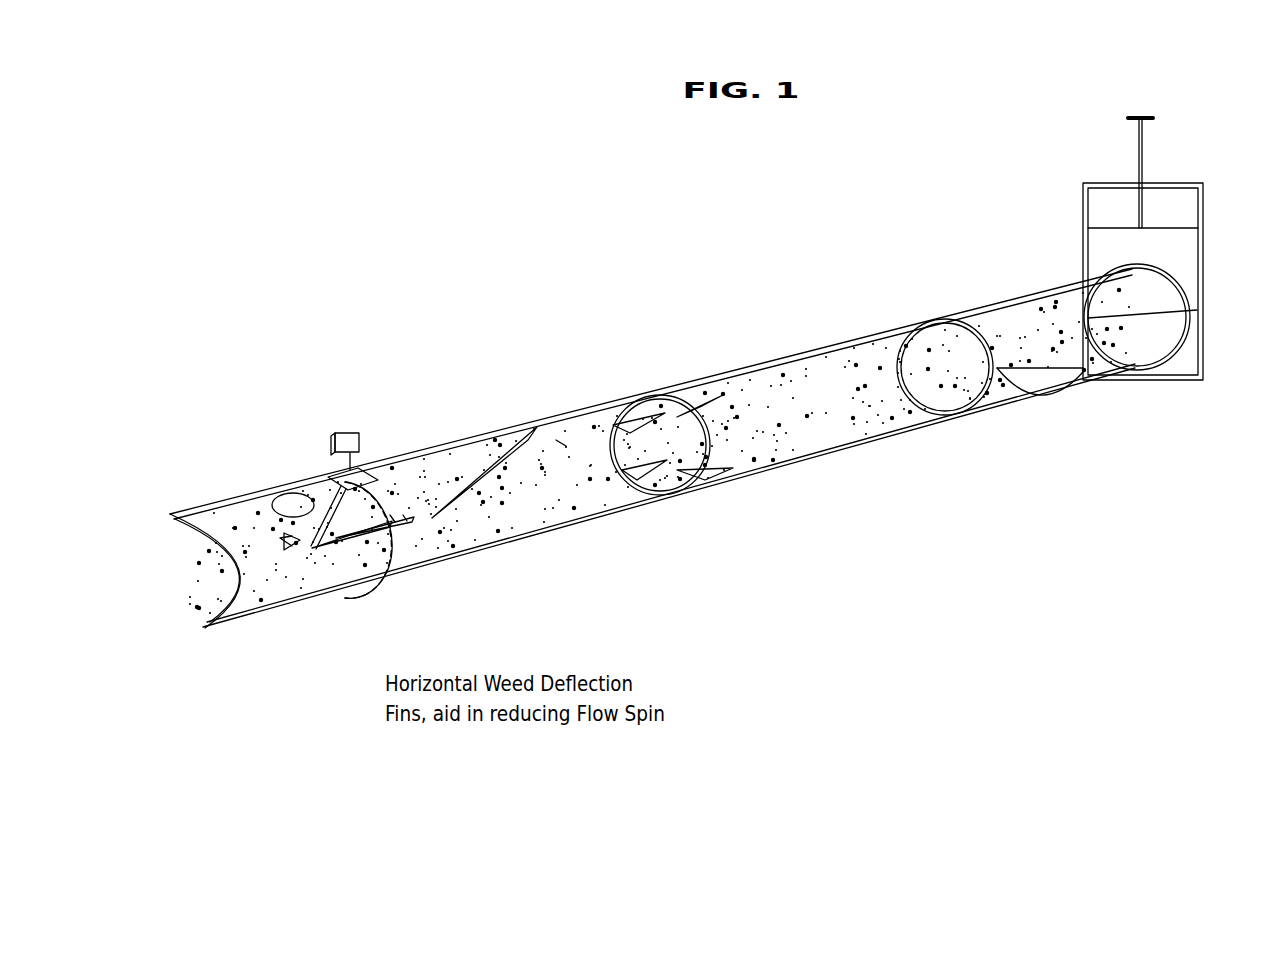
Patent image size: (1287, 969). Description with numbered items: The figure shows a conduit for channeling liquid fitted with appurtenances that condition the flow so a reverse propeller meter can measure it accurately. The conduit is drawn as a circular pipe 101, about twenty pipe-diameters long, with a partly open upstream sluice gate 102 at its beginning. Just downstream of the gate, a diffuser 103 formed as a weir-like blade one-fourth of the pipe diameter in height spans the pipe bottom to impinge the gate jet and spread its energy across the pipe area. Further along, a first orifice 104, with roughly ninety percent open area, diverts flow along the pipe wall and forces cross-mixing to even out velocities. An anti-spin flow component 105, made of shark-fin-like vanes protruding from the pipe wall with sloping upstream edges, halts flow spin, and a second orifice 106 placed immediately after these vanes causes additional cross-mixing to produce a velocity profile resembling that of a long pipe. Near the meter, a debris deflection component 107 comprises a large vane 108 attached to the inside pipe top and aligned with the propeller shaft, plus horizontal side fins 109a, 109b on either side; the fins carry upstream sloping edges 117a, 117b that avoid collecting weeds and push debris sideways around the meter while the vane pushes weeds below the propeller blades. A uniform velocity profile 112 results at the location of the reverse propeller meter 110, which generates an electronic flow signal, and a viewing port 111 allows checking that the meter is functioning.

The circular pipe 101 is at (849, 334).
The sluice gate 102 is at (1100, 253).
The diffuser 103 is at (1058, 378).
The first orifice 104 is at (944, 422).
The anti-spin flow component 105 is at (773, 517).
The second orifice 106 is at (662, 498).
The debris deflection component 107 is at (563, 443).
The large vane 108 is at (410, 481).
The side fin 109a is at (363, 537).
The side fin 109b is at (343, 540).
The reverse propeller meter 110 is at (277, 537).
The viewing port 111 is at (288, 502).
The uniform velocity profile 112 is at (303, 600).
The upstream sloping edge 117a is at (493, 474).
The upstream sloping edge 117b is at (403, 516).